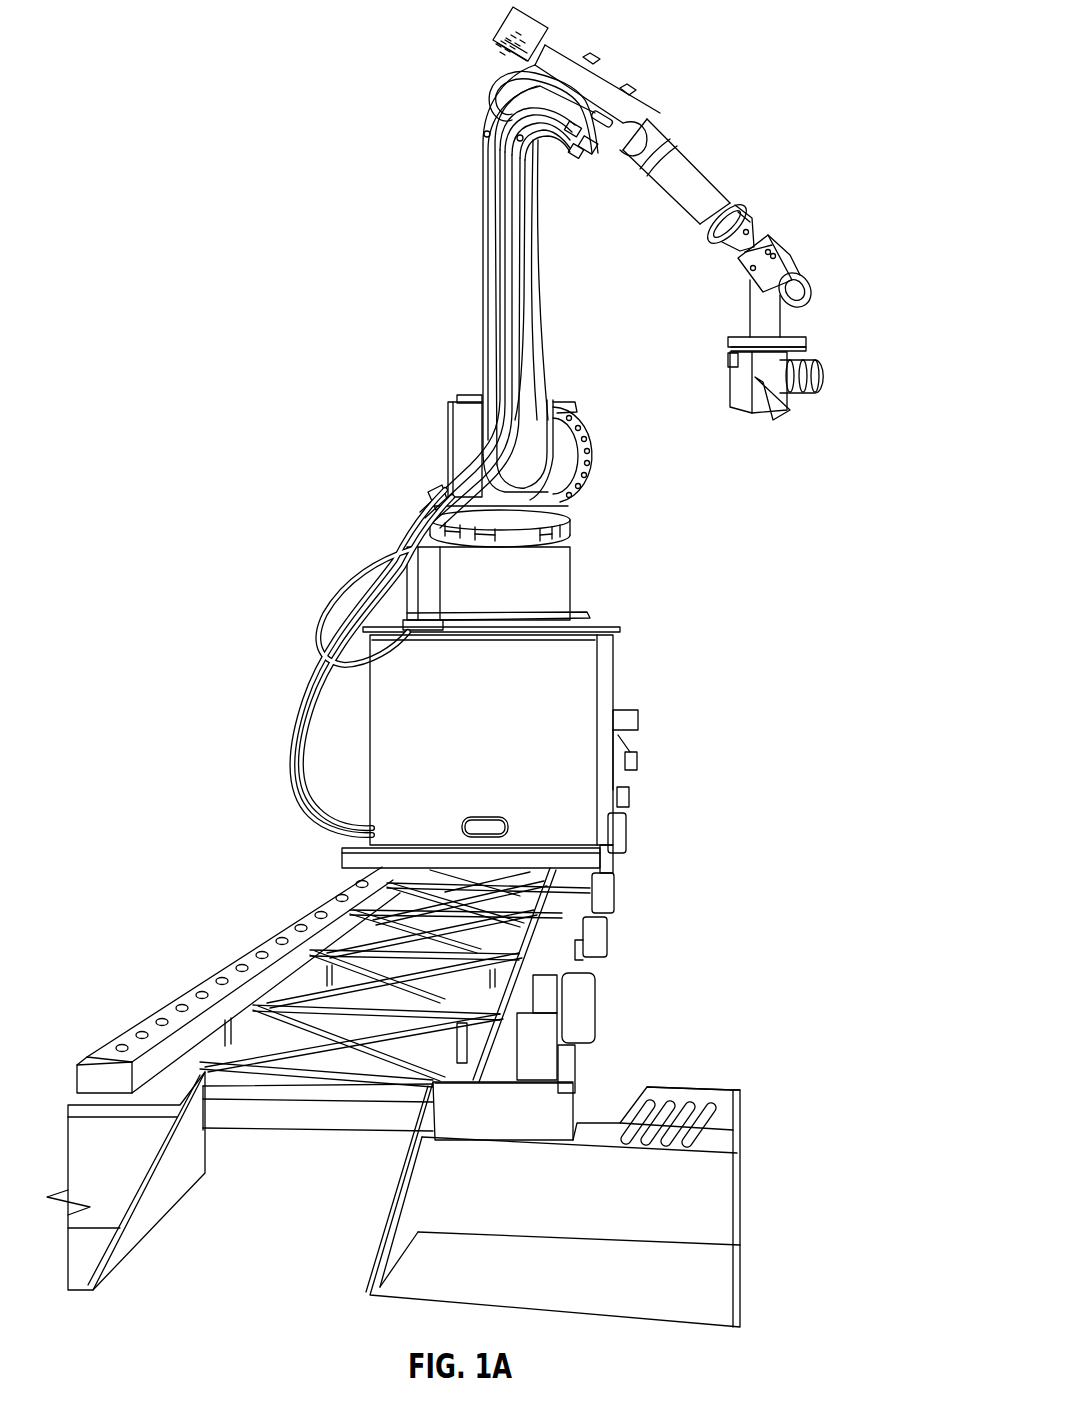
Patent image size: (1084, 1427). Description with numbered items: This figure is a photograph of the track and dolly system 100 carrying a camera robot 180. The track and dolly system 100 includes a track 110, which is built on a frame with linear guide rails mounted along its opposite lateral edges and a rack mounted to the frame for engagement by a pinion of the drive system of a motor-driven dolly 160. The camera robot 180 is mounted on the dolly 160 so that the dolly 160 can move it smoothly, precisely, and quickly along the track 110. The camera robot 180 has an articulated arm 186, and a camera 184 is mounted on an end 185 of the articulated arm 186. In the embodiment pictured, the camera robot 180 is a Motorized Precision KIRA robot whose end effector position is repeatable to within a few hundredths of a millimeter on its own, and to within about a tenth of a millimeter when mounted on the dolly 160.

The track and dolly system 100 is at (870, 84).
The track 110 is at (733, 986).
The motor-driven dolly 160 is at (770, 680).
The camera robot 180 is at (838, 248).
The camera 184 is at (808, 371).
The end 185 is at (792, 334).
The articulated arm 186 is at (733, 202).